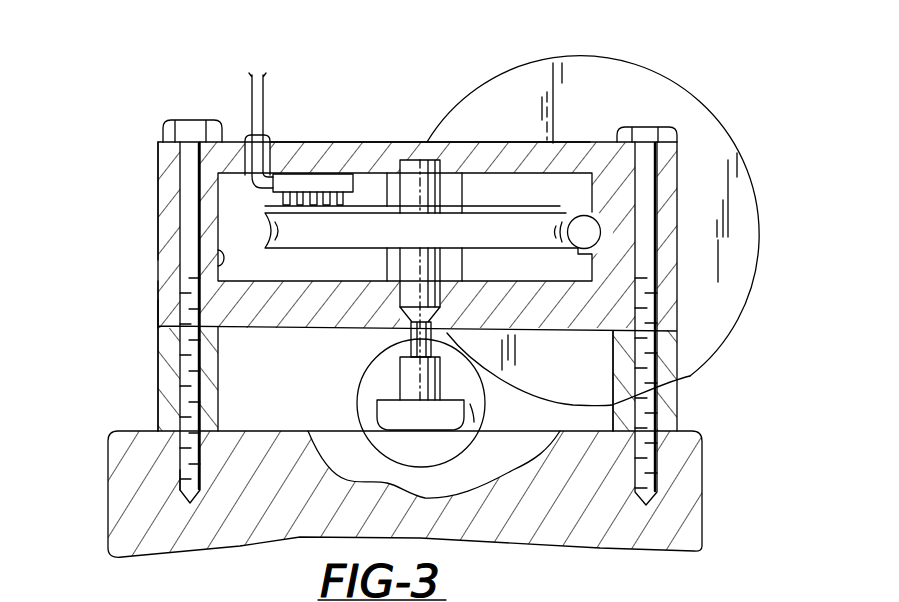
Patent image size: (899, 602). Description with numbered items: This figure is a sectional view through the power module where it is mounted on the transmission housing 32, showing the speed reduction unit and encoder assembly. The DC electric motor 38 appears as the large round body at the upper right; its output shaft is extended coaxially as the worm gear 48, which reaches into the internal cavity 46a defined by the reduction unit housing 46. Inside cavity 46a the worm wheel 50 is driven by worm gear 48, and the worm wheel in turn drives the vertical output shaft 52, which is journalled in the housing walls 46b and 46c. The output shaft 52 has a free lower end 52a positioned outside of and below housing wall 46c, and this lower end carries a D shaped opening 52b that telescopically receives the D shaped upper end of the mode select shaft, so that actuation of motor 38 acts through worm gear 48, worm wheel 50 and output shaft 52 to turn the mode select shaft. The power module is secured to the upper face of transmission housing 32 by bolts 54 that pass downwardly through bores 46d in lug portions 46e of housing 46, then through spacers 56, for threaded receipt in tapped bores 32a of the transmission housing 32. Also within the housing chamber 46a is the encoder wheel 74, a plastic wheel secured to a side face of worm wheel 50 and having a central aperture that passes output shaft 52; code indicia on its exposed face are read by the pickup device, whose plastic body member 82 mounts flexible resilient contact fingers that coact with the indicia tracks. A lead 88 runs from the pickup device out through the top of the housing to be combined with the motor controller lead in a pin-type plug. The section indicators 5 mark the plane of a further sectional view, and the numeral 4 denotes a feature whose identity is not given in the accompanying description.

The roller ball 4 is at (357, 392).
The section line 5- 5 is at (587, 200).
The transmission housing 32 is at (702, 433).
The tapped bores 32a is at (180, 472).
The DC electric motor 38 is at (728, 116).
The housing 46 is at (368, 130).
The internal cavity 46a is at (218, 258).
The housing wall 46b is at (418, 140).
The housing wall 46c is at (592, 337).
The bores 46d is at (190, 184).
The lug portions 46e is at (158, 300).
The worm gear 48 is at (601, 229).
The worm wheel 50 is at (326, 237).
The output shaft 52 is at (400, 267).
The free lower end 52a is at (412, 340).
The D shaped opening 52b is at (832, 594).
The bolts 54 is at (199, 121).
The spacers 56 is at (158, 353).
The encoder wheel 74 is at (517, 213).
The body member 82 is at (305, 180).
The lead 88 is at (264, 103).